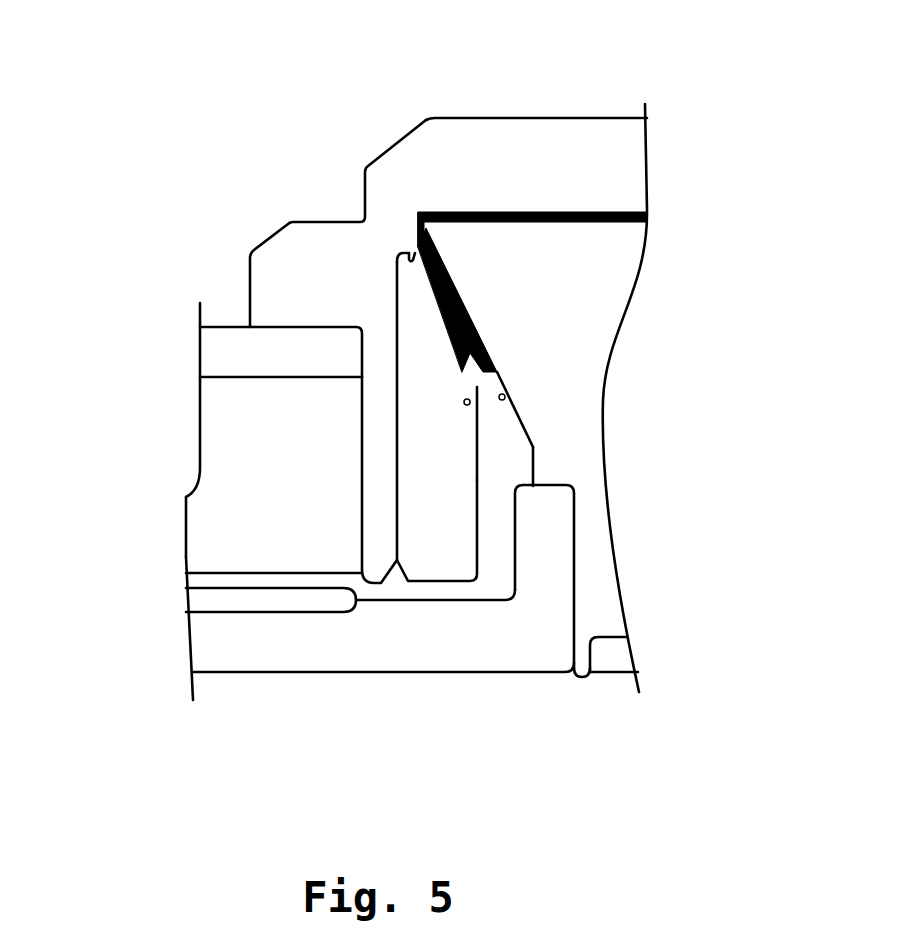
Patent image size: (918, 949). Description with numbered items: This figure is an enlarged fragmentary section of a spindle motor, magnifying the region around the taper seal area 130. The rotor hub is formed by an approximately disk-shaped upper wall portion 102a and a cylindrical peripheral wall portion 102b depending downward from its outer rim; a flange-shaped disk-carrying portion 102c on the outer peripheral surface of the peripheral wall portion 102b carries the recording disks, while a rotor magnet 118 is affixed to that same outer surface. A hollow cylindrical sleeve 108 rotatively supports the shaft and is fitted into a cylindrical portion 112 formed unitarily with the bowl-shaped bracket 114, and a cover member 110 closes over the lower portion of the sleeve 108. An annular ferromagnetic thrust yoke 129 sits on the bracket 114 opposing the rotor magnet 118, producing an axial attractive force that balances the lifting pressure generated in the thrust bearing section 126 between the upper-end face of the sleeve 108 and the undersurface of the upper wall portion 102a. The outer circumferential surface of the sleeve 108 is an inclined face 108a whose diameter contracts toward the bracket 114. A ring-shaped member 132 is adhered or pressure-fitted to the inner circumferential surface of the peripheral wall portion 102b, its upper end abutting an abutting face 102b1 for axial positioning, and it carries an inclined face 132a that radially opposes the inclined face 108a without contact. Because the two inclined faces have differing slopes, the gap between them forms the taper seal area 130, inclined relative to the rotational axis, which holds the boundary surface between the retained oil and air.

The upper wall portion 102a is at (552, 163).
The peripheral wall portion 102b is at (377, 455).
The abutting face 102b1 is at (413, 253).
The disk-carrying portion 102c is at (285, 268).
The sleeve 108 is at (548, 284).
The inclined face 108a is at (505, 397).
The cover member 110 is at (608, 658).
The cylindrical portion 112 is at (552, 537).
The bracket 114 is at (471, 637).
The rotor magnet 118 is at (250, 417).
The thrust bearing section 126 is at (496, 212).
The thrust yoke 129 is at (238, 600).
The taper seal area 130 is at (462, 373).
The ring-shaped member 132 is at (445, 500).
The inclined face 132a is at (464, 403).